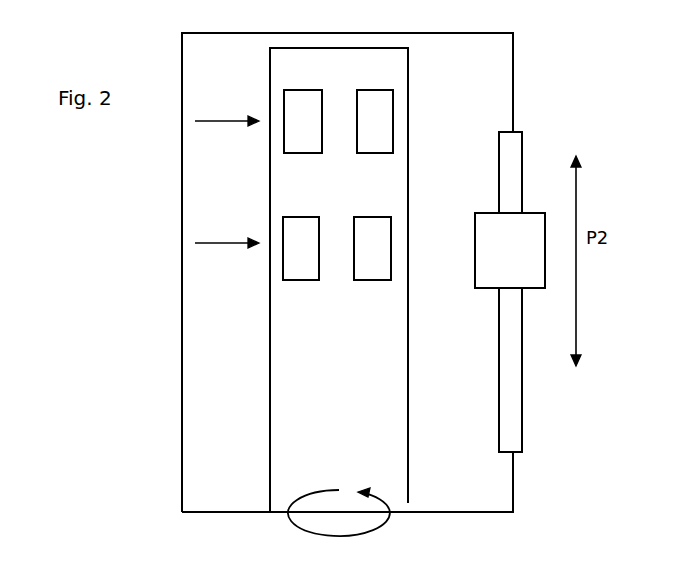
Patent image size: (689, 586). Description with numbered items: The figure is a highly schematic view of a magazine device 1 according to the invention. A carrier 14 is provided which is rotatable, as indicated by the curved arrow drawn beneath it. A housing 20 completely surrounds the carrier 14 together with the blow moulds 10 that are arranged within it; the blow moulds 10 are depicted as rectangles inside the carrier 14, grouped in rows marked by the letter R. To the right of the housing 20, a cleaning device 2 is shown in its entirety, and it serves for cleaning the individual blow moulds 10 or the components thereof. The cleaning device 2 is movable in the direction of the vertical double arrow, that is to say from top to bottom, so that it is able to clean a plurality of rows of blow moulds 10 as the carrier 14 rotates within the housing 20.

The solar installation / device 1 is at (149, 166).
The cleaning device 2 is at (533, 392).
The blow moulds 10 is at (300, 239).
The carrier 14 is at (313, 378).
The housing 20 is at (182, 477).